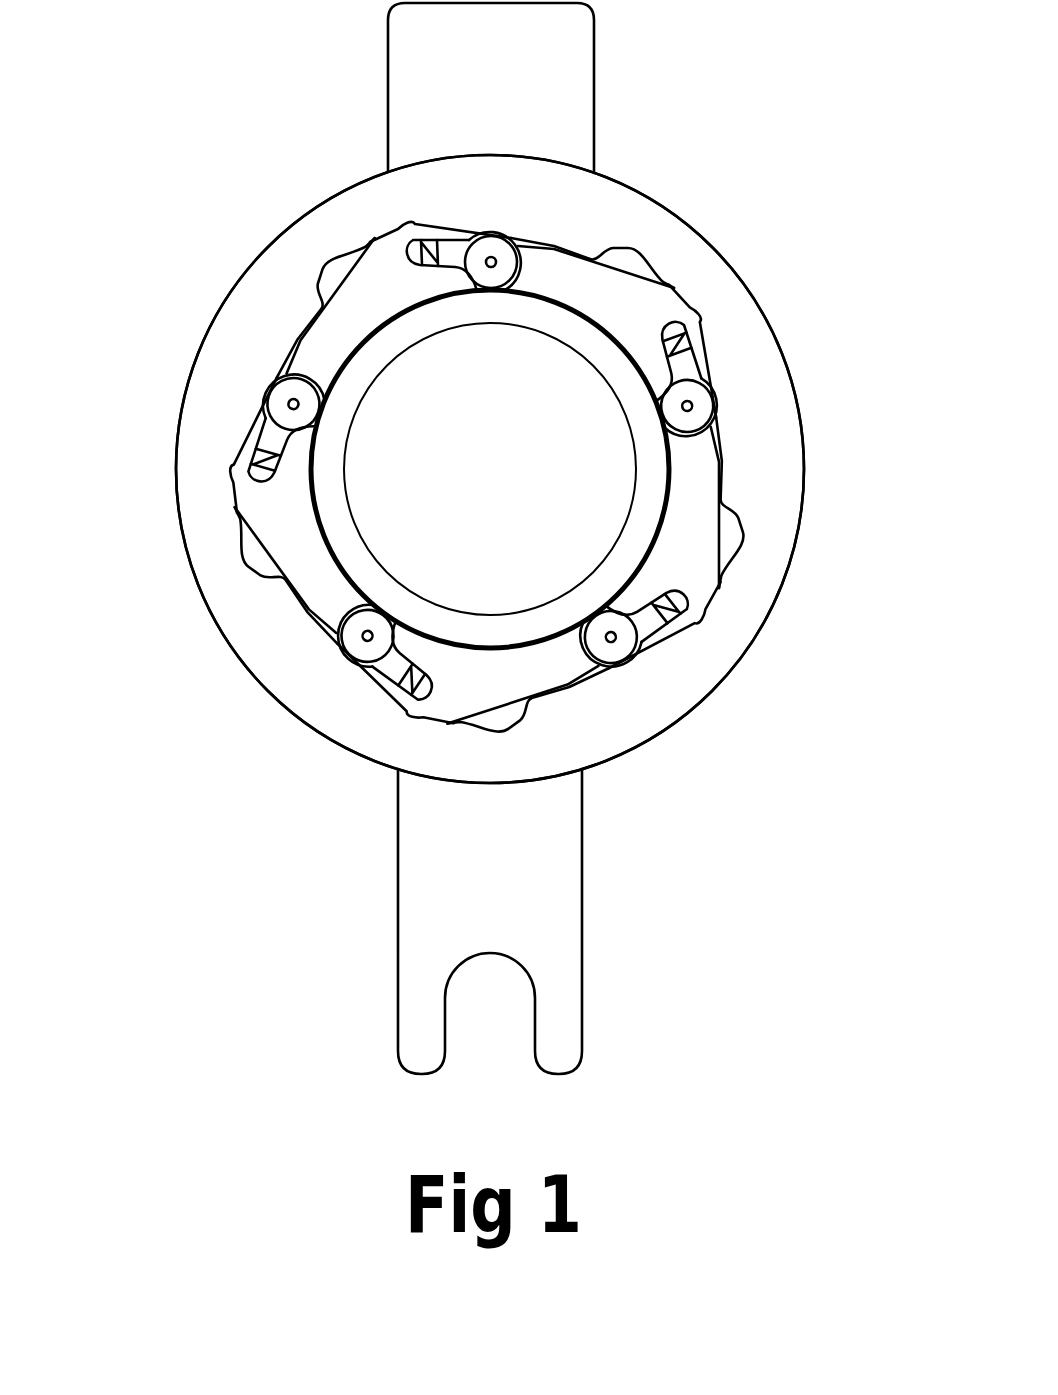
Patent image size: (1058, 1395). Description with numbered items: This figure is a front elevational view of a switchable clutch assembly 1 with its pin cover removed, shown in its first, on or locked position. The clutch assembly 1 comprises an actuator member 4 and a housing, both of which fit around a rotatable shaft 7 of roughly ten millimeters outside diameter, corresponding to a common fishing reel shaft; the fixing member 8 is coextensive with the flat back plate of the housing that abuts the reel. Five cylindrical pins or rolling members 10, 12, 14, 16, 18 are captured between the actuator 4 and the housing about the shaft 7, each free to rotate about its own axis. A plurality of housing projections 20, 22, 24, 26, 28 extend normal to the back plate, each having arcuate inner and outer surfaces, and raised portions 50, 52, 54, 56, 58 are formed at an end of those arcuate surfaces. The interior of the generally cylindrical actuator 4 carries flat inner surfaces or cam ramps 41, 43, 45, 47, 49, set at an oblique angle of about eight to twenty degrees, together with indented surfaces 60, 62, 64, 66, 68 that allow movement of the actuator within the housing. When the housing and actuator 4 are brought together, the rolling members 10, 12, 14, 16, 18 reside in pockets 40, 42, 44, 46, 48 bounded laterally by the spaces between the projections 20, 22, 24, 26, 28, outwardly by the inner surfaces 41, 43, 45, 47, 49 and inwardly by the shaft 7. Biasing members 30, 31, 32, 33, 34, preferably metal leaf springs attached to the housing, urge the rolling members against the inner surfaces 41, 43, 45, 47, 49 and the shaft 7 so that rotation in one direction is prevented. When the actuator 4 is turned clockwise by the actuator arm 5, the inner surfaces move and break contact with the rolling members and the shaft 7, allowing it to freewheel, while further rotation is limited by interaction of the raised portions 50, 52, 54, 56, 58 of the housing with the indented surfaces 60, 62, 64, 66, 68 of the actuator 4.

The clutch assembly 1 is at (630, 168).
The actuator member 4 is at (672, 208).
The actuator arm 5 is at (582, 978).
The rotatable shaft 7 is at (720, 463).
The fixing member 8 is at (594, 60).
The rolling member 10 is at (491, 262).
The rolling member 12 is at (688, 405).
The rolling member 14 is at (610, 637).
The rolling member 16 is at (368, 636).
The rolling member 18 is at (293, 404).
The housing projection 20 is at (630, 300).
The housing projection 22 is at (695, 505).
The housing projection 24 is at (540, 672).
The housing projection 26 is at (300, 540).
The housing projection 28 is at (345, 325).
The biasing member 30 is at (400, 227).
The biasing member 31 is at (683, 350).
The biasing member 32 is at (705, 612).
The biasing member 33 is at (421, 718).
The biasing member 34 is at (250, 467).
The pocket 40 is at (430, 237).
The flat inner surface 41 is at (447, 239).
The pocket 42 is at (693, 340).
The flat inner surface 43 is at (700, 358).
The pocket 44 is at (672, 622).
The flat inner surface 45 is at (660, 632).
The pocket 46 is at (404, 692).
The flat inner surface 47 is at (392, 680).
The pocket 48 is at (253, 440).
The flat inner surface 49 is at (278, 372).
The raised portion 50 is at (690, 300).
The raised portion 52 is at (720, 582).
The raised portion 54 is at (454, 724).
The raised portion 56 is at (237, 513).
The raised portion 58 is at (370, 242).
The indented surface 60 is at (612, 250).
The indented surface 62 is at (738, 518).
The indented surface 64 is at (520, 720).
The indented surface 66 is at (260, 576).
The indented surface 68 is at (318, 283).